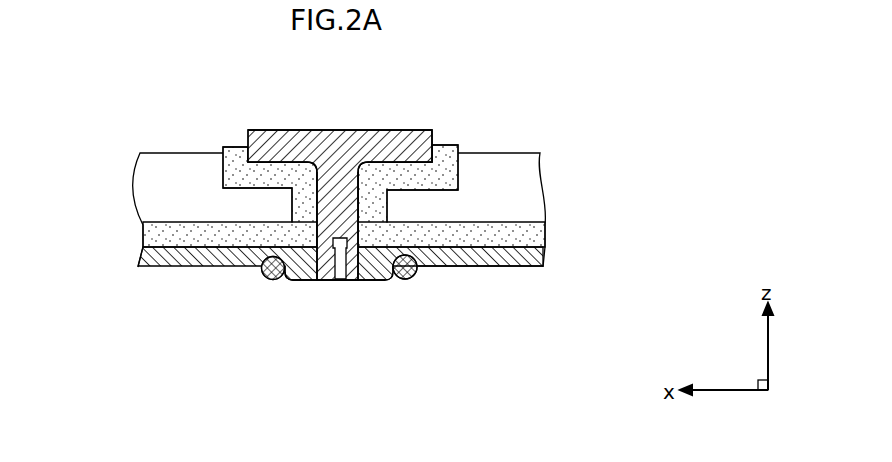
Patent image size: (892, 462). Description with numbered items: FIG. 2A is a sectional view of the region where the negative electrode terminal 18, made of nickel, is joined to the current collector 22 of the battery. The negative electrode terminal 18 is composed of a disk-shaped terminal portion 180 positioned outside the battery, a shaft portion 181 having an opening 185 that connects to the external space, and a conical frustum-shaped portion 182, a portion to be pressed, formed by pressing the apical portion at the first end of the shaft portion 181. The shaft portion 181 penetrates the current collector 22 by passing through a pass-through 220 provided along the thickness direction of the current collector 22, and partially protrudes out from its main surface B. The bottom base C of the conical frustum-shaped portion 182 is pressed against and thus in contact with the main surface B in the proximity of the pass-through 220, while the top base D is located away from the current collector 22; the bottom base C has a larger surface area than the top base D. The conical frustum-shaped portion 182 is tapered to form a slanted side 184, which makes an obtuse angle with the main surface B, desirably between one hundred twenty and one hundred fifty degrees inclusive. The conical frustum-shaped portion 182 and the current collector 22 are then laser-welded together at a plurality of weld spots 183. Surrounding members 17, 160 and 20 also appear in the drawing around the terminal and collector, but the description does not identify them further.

The negative electrode terminal 18 is at (348, 121).
The insulating member 17 is at (448, 147).
The housing wall 160 is at (518, 160).
The insulating layer 20 is at (541, 233).
The current collector 22 is at (544, 253).
The disk-shaped terminal portion 180 is at (313, 130).
The shaft portion 181 is at (317, 205).
The opening 185 is at (317, 245).
The conical frustum-shaped portion 182 is at (371, 283).
The weld spots 183 is at (261, 273).
The slanted side 184 is at (400, 280).
The pass-through 220 is at (386, 281).
The main surface B is at (443, 263).
The bottom base C is at (355, 281).
The top base D is at (287, 283).